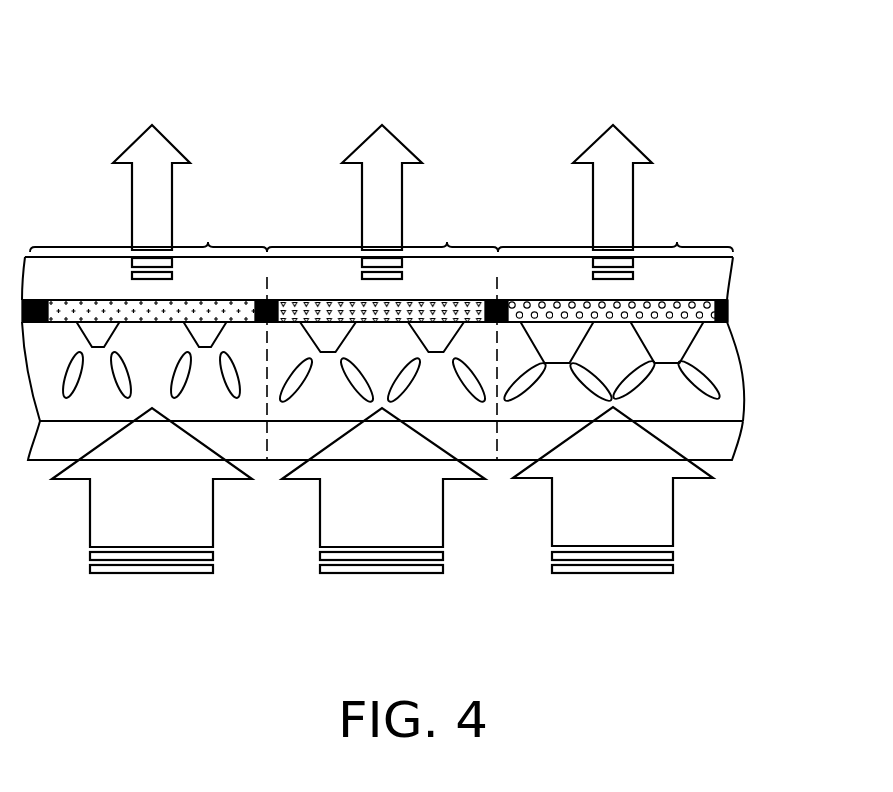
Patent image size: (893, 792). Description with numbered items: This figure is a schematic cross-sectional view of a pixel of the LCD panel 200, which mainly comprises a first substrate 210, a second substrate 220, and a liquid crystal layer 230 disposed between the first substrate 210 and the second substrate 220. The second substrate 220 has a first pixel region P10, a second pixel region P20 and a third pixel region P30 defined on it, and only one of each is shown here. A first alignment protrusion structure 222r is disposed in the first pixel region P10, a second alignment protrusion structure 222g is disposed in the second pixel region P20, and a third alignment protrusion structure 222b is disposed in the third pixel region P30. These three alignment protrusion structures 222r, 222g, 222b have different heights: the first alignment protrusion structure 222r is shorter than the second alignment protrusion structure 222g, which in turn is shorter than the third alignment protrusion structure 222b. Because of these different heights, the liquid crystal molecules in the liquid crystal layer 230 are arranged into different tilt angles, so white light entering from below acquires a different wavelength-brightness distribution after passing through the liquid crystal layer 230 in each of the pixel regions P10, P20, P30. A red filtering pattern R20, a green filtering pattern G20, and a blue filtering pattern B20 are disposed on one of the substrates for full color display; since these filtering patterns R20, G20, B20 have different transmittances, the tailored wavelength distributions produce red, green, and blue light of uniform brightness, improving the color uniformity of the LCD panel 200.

The LCD panel 200 is at (708, 750).
The first substrate 210 is at (727, 443).
The second substrate 220 is at (715, 282).
The liquid crystal layer 230 is at (733, 378).
The first alignment protrusion structure 222r is at (207, 340).
The second alignment protrusion structure 222g is at (437, 342).
The third alignment protrusion structure 222b is at (668, 350).
The red filtering pattern R20 is at (87, 320).
The green filtering pattern G20 is at (320, 320).
The blue filtering pattern B20 is at (555, 316).
The first pixel region P10 is at (208, 242).
The second pixel region P20 is at (447, 242).
The third pixel region P30 is at (677, 242).